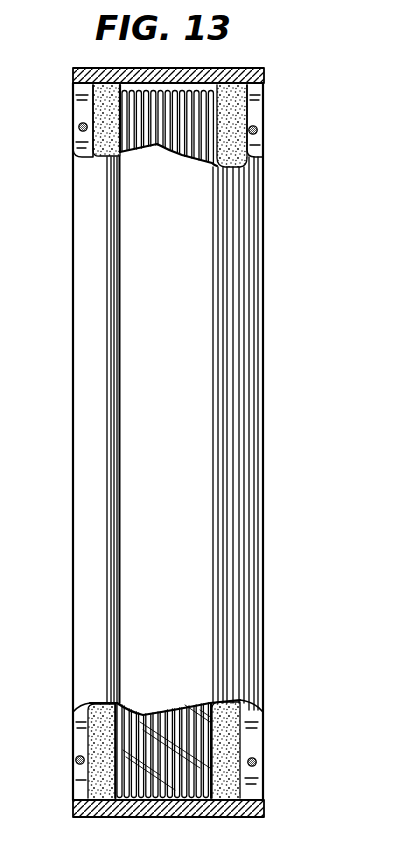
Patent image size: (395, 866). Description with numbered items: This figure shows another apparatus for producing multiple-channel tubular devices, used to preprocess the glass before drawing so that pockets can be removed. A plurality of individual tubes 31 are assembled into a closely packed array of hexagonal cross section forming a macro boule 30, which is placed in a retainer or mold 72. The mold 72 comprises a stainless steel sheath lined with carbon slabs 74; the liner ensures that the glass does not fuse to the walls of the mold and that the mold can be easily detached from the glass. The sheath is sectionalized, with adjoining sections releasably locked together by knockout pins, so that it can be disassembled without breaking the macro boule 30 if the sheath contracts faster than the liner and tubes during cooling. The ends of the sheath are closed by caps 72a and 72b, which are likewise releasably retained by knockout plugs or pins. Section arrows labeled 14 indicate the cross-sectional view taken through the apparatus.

The retainer or mold 72 is at (242, 273).
The cap 72a is at (245, 71).
The cap 72b is at (230, 806).
The macro boule 30 is at (166, 146).
The individual tubes 31 is at (212, 118).
The carbon slabs 74 is at (110, 774).
The section line 14- 14 is at (97, 442).